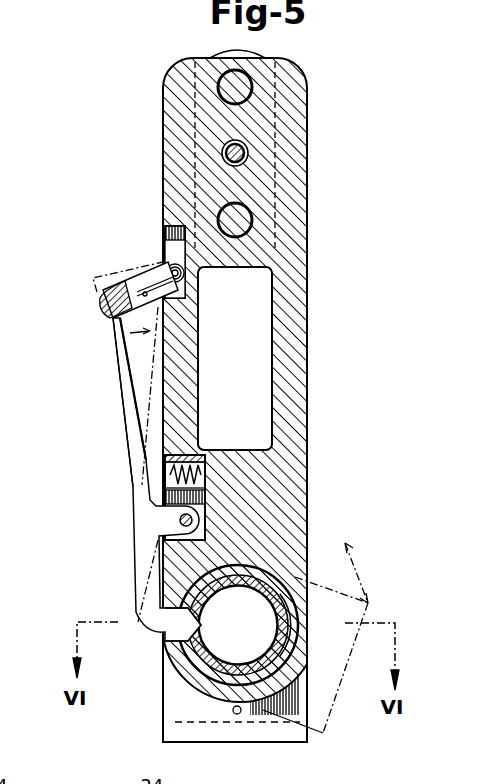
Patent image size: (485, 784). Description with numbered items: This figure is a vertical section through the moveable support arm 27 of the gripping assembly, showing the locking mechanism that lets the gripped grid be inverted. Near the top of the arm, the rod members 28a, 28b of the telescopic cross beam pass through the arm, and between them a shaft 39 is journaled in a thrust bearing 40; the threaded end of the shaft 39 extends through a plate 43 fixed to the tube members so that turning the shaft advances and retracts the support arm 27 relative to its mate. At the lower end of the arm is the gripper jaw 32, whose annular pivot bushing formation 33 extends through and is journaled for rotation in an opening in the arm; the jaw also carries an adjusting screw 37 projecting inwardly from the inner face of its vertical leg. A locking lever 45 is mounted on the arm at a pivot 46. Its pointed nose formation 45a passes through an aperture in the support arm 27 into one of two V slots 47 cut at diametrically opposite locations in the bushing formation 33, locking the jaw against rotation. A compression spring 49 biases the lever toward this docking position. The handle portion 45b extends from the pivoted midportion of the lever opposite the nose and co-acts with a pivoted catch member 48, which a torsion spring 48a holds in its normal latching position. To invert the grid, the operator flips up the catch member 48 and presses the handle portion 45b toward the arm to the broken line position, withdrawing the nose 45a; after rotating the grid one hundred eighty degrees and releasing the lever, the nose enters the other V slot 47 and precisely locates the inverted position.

The support arm 27 is at (302, 488).
The rod member 28a is at (245, 82).
The rod member 28b is at (250, 219).
The gripper jaw 32 is at (322, 745).
The annular pivot bushing formation 33 is at (196, 662).
The adjusting screw 37 is at (237, 714).
The shaft 39 is at (250, 152).
The thrust bearing 40 is at (223, 152).
The plate 43 is at (222, 54).
The locking lever 45 is at (140, 505).
The pointed nose formation 45a is at (155, 618).
The handle portion 45b is at (119, 362).
The pivot 46 is at (180, 520).
The V slot 47 is at (293, 624).
The catch member 48 is at (103, 298).
The torsion spring 48a is at (153, 294).
The compression spring 49 is at (165, 468).